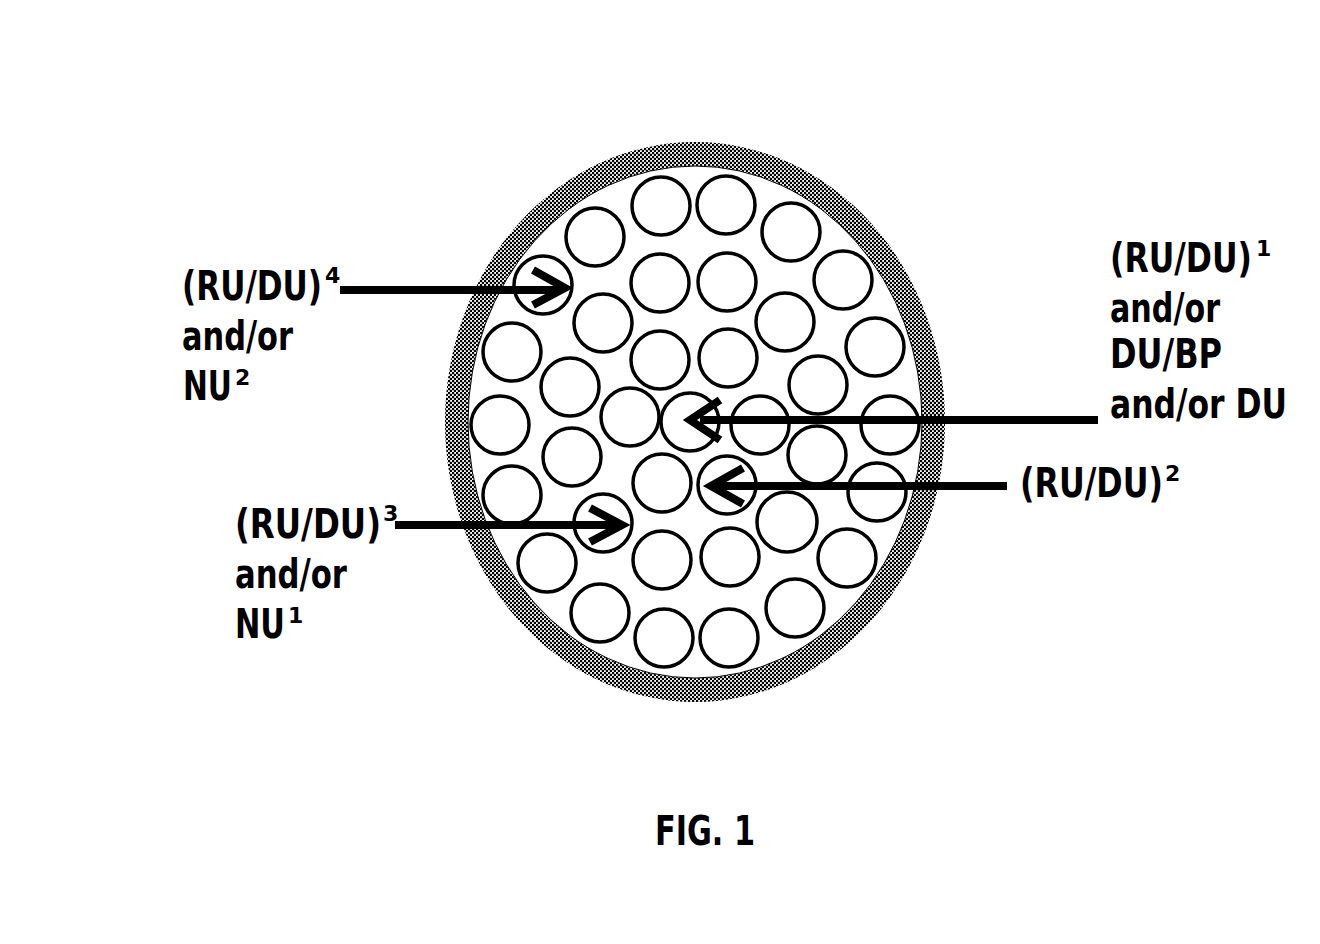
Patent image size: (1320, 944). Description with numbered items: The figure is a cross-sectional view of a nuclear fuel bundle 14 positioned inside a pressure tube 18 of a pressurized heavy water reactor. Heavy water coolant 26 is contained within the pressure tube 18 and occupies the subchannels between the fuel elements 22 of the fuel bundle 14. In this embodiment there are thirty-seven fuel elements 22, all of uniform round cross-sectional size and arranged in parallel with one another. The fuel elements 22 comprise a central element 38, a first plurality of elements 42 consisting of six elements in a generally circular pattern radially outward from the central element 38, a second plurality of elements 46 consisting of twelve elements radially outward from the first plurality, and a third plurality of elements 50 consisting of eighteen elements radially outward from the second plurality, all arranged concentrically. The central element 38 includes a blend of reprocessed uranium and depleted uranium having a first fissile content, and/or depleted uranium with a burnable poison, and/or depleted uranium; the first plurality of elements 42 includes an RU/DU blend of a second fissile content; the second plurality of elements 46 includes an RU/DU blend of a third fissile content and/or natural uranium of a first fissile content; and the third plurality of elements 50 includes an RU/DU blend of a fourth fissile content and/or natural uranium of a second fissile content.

The fuel bundle 14 is at (617, 203).
The pressure tube 18 is at (760, 153).
The fuel elements 22 is at (605, 330).
The heavy water coolant 26 is at (833, 235).
The central element 38 is at (835, 359).
The first plurality of elements 42 is at (818, 602).
The second plurality of elements 46 is at (633, 548).
The third plurality of elements 50 is at (507, 388).